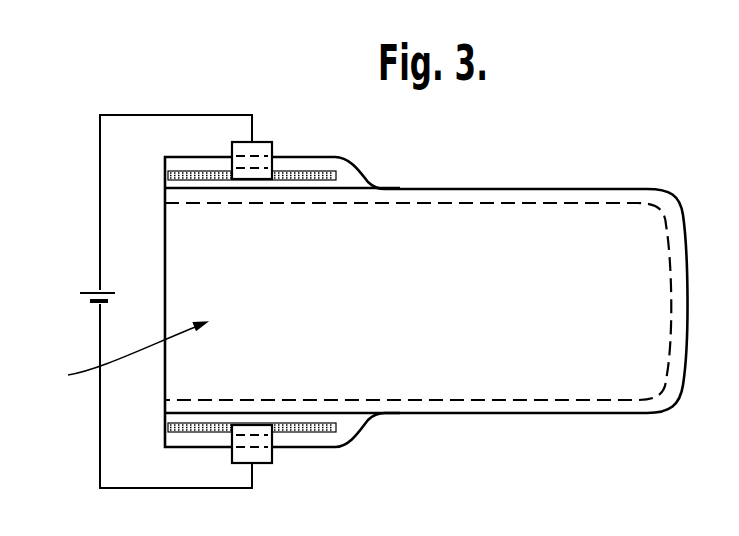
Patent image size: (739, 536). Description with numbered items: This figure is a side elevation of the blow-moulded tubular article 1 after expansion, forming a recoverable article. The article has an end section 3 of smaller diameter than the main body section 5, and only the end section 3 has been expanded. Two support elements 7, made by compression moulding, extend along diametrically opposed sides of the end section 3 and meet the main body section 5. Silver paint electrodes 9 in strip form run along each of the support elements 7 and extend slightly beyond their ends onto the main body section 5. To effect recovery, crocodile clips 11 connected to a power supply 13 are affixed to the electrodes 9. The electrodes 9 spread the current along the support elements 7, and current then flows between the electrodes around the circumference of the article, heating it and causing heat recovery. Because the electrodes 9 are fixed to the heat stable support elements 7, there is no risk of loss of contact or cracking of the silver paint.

The tubular article 1 is at (444, 182).
The end section 3 is at (126, 358).
The main body section 5 is at (577, 195).
The support elements 7 is at (313, 162).
The silver paint electrodes 9 is at (295, 183).
The crocodile clips 11 is at (262, 150).
The power supply 13 is at (97, 292).